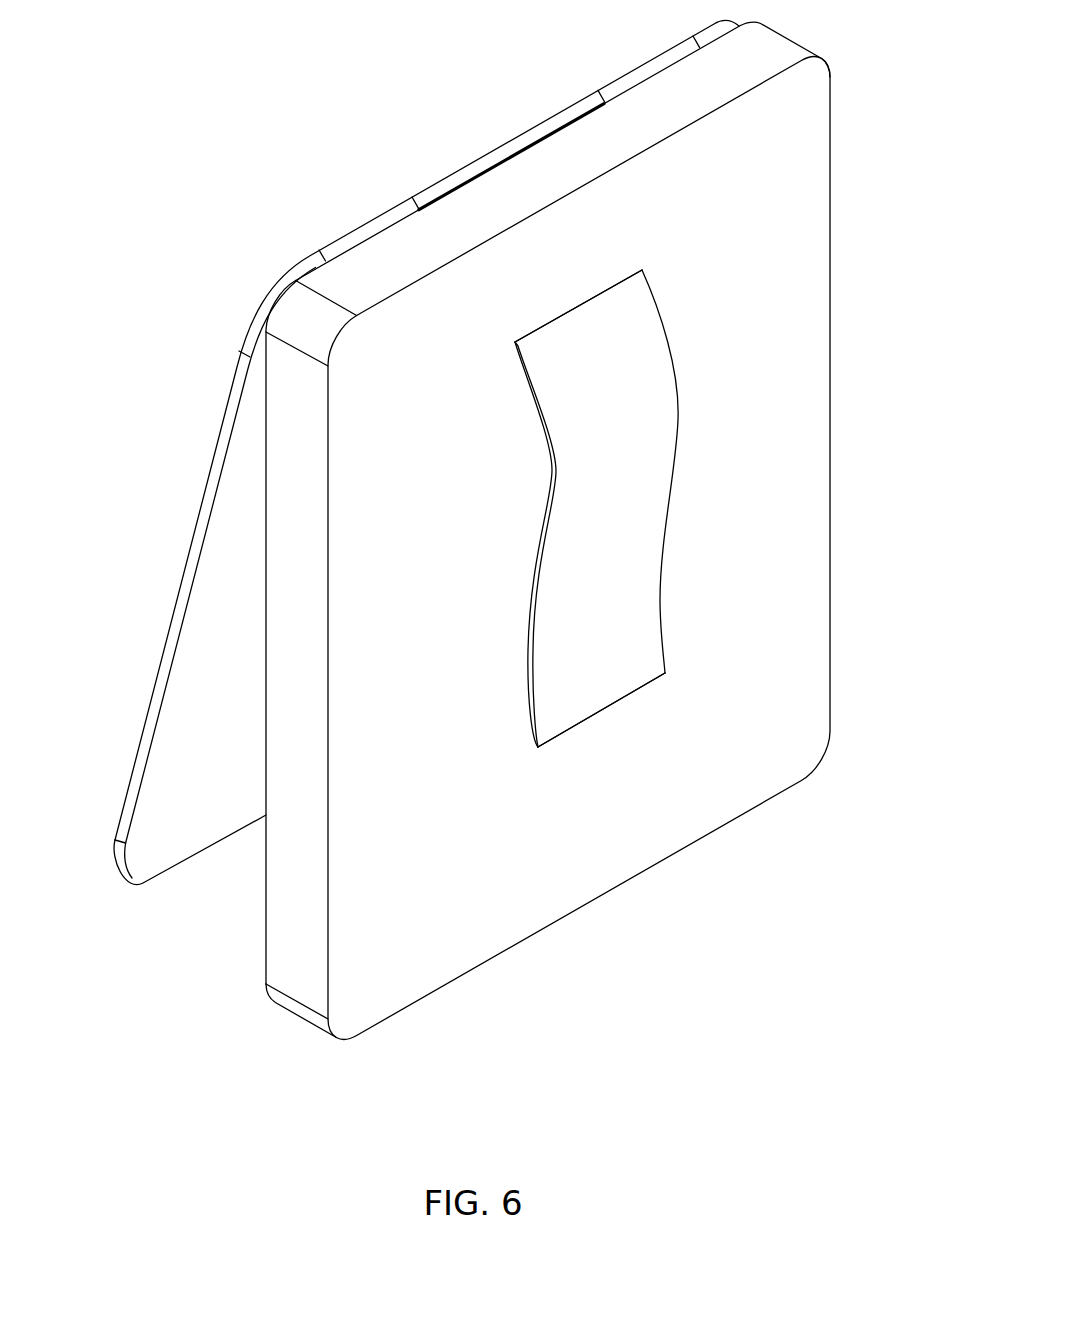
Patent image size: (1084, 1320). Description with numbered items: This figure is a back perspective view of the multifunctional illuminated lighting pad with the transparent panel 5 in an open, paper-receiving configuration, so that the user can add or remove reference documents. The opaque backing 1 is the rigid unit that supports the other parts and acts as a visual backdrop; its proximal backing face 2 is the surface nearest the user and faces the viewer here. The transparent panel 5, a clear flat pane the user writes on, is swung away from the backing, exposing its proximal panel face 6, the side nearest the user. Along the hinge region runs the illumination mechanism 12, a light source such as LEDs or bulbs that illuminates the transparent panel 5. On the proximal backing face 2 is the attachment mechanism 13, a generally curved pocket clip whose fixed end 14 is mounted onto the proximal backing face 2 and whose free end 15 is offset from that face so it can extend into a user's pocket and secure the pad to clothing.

The opaque backing 1 is at (499, 529).
The proximal backing face 2 is at (810, 365).
The transparent panel 5 is at (197, 415).
The proximal panel face 6 is at (175, 708).
The illumination mechanism 12 is at (542, 127).
The attachment mechanism 13 is at (703, 432).
The fixed end 14 is at (605, 318).
The free end 15 is at (570, 703).